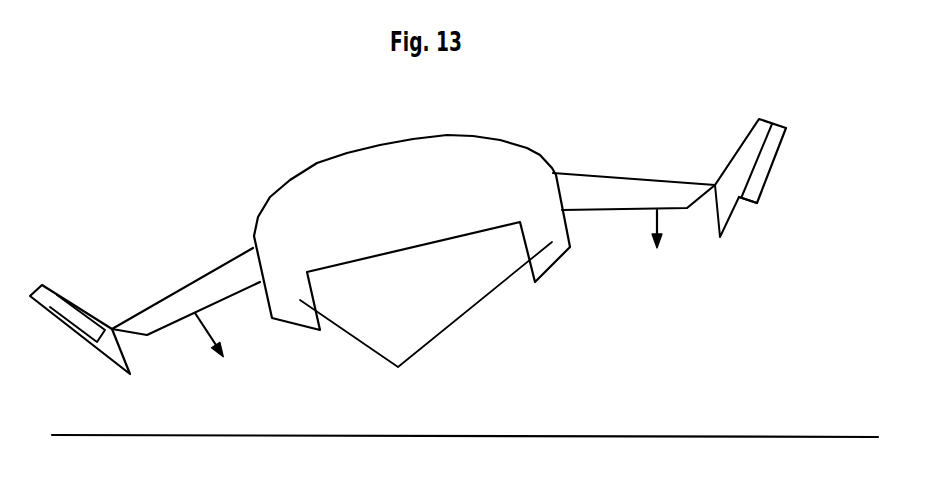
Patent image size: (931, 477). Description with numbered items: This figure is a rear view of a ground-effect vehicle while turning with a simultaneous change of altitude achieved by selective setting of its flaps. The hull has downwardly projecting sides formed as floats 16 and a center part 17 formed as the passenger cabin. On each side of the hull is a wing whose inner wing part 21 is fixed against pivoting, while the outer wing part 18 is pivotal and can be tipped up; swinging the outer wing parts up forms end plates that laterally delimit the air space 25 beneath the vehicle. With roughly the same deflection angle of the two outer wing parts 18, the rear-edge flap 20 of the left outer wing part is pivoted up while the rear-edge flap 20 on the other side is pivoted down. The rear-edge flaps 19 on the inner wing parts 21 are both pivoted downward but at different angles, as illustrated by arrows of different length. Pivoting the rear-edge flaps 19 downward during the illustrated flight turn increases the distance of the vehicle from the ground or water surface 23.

The floats 16 is at (426, 332).
The center part 17 is at (412, 232).
The outer wing part 18 is at (88, 310).
The rear-edge flap 19 is at (435, 306).
The rear-edge flap 20 is at (62, 313).
The inner wing part 21 is at (203, 287).
The ground or water surface 23 is at (737, 435).
The air space 25 is at (728, 212).